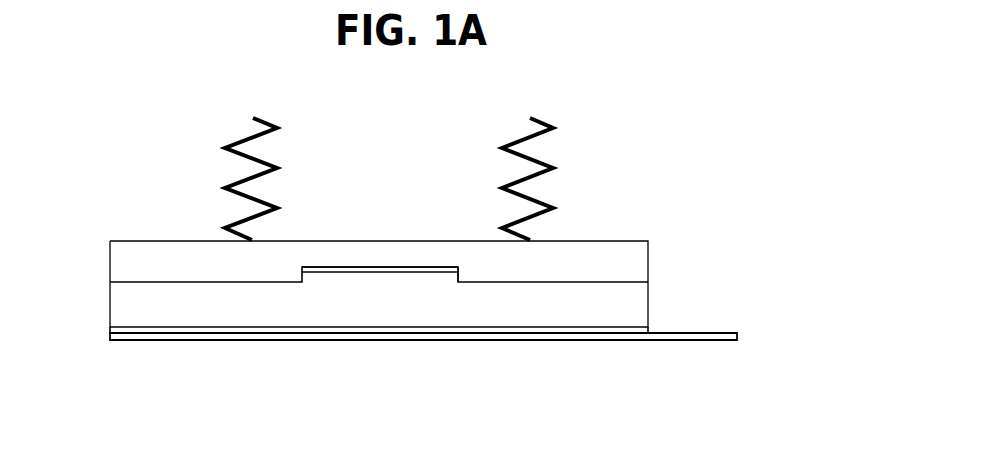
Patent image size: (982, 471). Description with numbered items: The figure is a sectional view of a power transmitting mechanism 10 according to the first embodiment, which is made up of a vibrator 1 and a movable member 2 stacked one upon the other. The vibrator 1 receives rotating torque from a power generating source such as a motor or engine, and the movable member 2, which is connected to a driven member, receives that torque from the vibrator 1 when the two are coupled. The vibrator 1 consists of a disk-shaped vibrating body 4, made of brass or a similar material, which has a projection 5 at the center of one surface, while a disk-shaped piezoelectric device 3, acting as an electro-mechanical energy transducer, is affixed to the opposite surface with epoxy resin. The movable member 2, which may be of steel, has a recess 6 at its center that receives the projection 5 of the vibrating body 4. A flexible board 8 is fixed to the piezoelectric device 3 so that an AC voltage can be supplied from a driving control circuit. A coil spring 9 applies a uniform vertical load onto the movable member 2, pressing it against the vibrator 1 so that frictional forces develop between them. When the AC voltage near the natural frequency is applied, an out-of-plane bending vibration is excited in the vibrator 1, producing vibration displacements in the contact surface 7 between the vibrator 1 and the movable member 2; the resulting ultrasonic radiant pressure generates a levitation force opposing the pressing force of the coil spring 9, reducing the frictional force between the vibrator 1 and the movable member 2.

The power transmitting mechanism 10 is at (787, 118).
The vibrator 1 is at (745, 273).
The movable member 2 is at (640, 262).
The piezoelectric device 3 is at (640, 328).
The vibrating body 4 is at (640, 302).
The projection 5 is at (446, 278).
The recess 6 is at (412, 266).
The contact surface 7 is at (142, 285).
The flexible board 8 is at (704, 341).
The coil spring 9 is at (226, 188).